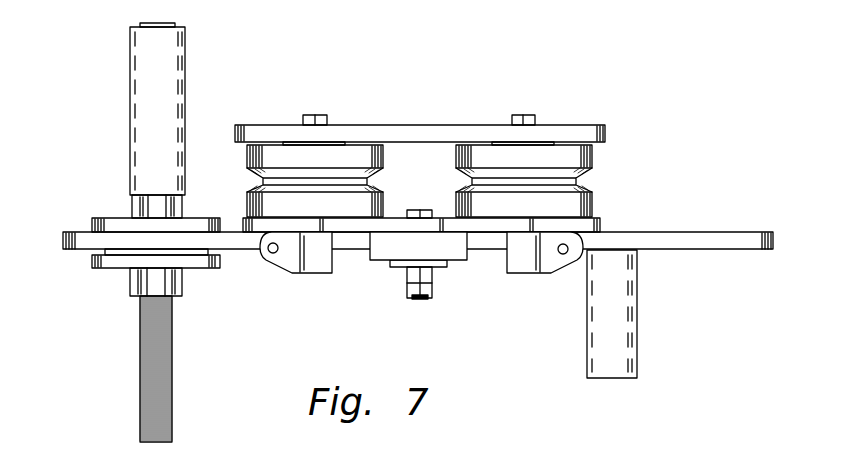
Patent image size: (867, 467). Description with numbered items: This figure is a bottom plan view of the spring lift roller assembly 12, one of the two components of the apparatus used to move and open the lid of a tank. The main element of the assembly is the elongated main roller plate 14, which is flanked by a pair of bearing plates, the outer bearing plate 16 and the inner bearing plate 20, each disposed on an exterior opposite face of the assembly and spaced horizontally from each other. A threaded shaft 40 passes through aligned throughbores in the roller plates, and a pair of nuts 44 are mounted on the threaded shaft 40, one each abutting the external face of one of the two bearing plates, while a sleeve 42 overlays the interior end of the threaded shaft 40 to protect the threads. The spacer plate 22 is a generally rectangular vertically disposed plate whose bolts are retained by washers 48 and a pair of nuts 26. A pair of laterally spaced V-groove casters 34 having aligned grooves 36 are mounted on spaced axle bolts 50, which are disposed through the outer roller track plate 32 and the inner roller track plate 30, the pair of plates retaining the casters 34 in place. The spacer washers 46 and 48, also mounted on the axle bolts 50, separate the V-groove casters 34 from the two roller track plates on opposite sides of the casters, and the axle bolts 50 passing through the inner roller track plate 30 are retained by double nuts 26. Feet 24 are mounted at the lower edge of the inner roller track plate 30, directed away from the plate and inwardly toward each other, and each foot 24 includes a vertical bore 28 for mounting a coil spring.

The spring lift roller assembly 12 is at (458, 62).
The main roller plate 14 is at (687, 250).
The outer bearing plate 16 is at (100, 268).
The inner bearing plate 20 is at (105, 218).
The spacer plate 22 is at (382, 253).
The foot 24 is at (306, 273).
The nut 26 is at (432, 290).
The vertical bore 28 is at (272, 260).
The inner roller track plate 30 is at (388, 217).
The outer roller track plate 32 is at (347, 125).
The V-groove caster 34 is at (247, 160).
The groove 36 is at (255, 185).
The threaded shaft 40 is at (140, 390).
The sleeve 42 is at (170, 132).
The nut 44 is at (132, 205).
The spacer washer 46 is at (318, 217).
The washer 48 is at (288, 140).
The axle bolt 50 is at (313, 115).